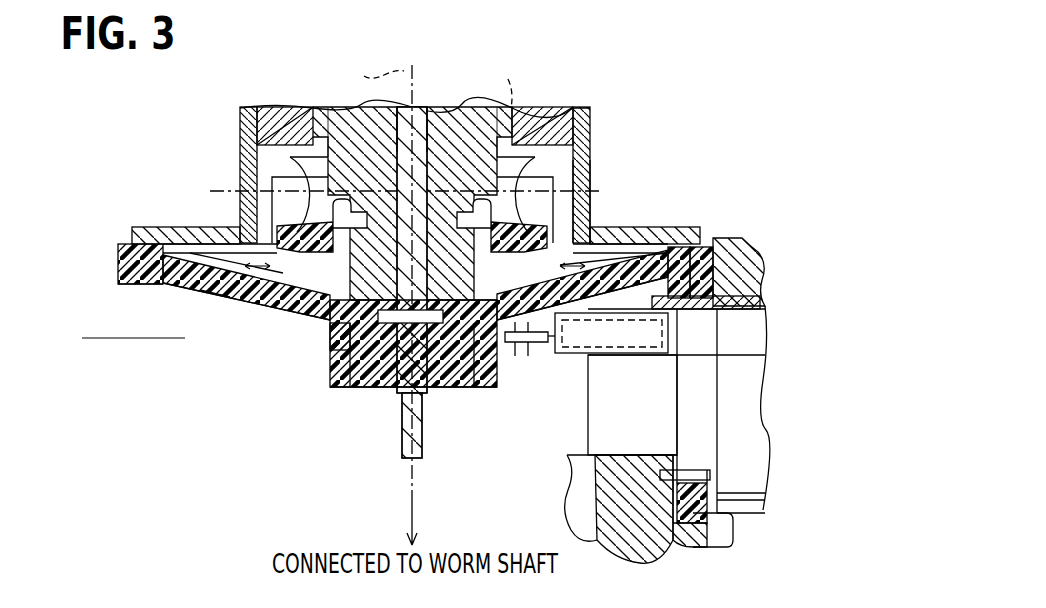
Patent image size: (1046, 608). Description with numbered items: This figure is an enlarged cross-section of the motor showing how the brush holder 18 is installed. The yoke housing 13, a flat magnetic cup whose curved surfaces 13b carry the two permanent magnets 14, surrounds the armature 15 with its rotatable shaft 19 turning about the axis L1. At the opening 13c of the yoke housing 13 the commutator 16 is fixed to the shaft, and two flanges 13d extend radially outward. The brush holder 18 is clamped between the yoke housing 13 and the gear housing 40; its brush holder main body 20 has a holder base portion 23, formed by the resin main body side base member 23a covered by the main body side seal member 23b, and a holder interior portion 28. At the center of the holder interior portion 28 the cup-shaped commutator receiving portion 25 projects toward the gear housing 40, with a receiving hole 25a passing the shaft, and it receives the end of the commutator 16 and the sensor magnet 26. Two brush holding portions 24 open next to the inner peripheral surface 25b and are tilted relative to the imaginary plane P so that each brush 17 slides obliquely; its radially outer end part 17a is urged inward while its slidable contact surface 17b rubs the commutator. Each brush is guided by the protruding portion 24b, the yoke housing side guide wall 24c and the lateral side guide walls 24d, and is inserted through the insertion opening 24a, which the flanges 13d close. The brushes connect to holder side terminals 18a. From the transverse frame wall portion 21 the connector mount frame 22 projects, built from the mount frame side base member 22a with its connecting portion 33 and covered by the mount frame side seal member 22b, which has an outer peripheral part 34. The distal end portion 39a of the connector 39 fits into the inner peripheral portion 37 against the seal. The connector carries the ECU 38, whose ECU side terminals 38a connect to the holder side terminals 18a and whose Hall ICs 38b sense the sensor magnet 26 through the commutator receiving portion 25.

The yoke housing 13 is at (240, 116).
The curved surfaces 13b is at (590, 135).
The opening 13c is at (272, 236).
The flanges 13d is at (140, 227).
The permanent magnets 14 is at (266, 108).
The armature 15 is at (472, 108).
The commutator 16 is at (432, 215).
The brushes 17 is at (338, 243).
The radially outer end part 17a is at (252, 290).
The slidable contact surface 17b is at (352, 365).
The brush holder 18 is at (120, 244).
The holder side terminals 18a is at (478, 330).
The rotatable shaft 19 is at (428, 108).
The brush holder main body 20 is at (676, 247).
The transverse frame wall portion 21 is at (700, 247).
The connector mount frame 22 is at (830, 466).
The mount frame side base member 22a is at (720, 503).
The mount frame side seal member 22b is at (710, 475).
The holder base portion 23 is at (185, 339).
The main body side base member 23a is at (163, 286).
The main body side seal member 23b is at (118, 286).
The brush holding portions 24 is at (272, 222).
The insertion opening 24a is at (202, 244).
The protruding portion 24b is at (290, 305).
The yoke housing side guide wall 24c is at (300, 162).
The lateral side guide walls 24d is at (224, 300).
The commutator receiving portion 25 is at (330, 320).
The receiving hole 25a is at (382, 387).
The inner peripheral surface 25b is at (338, 380).
The sensor magnet 26 is at (330, 348).
The holder interior portion 28 is at (216, 300).
The connecting portion 33 is at (677, 530).
The outer peripheral part 34 is at (733, 540).
The inner peripheral portion 37 is at (690, 470).
The electronic control unit (ECU) 38 is at (622, 355).
The ECU side terminals 38a is at (530, 356).
The Hall ICs 38b is at (588, 370).
The connector 39 is at (757, 292).
The distal end portion 39a is at (690, 309).
The gear housing 40 is at (595, 497).
The axis L1 is at (370, 74).
The imaginary plane P is at (511, 80).